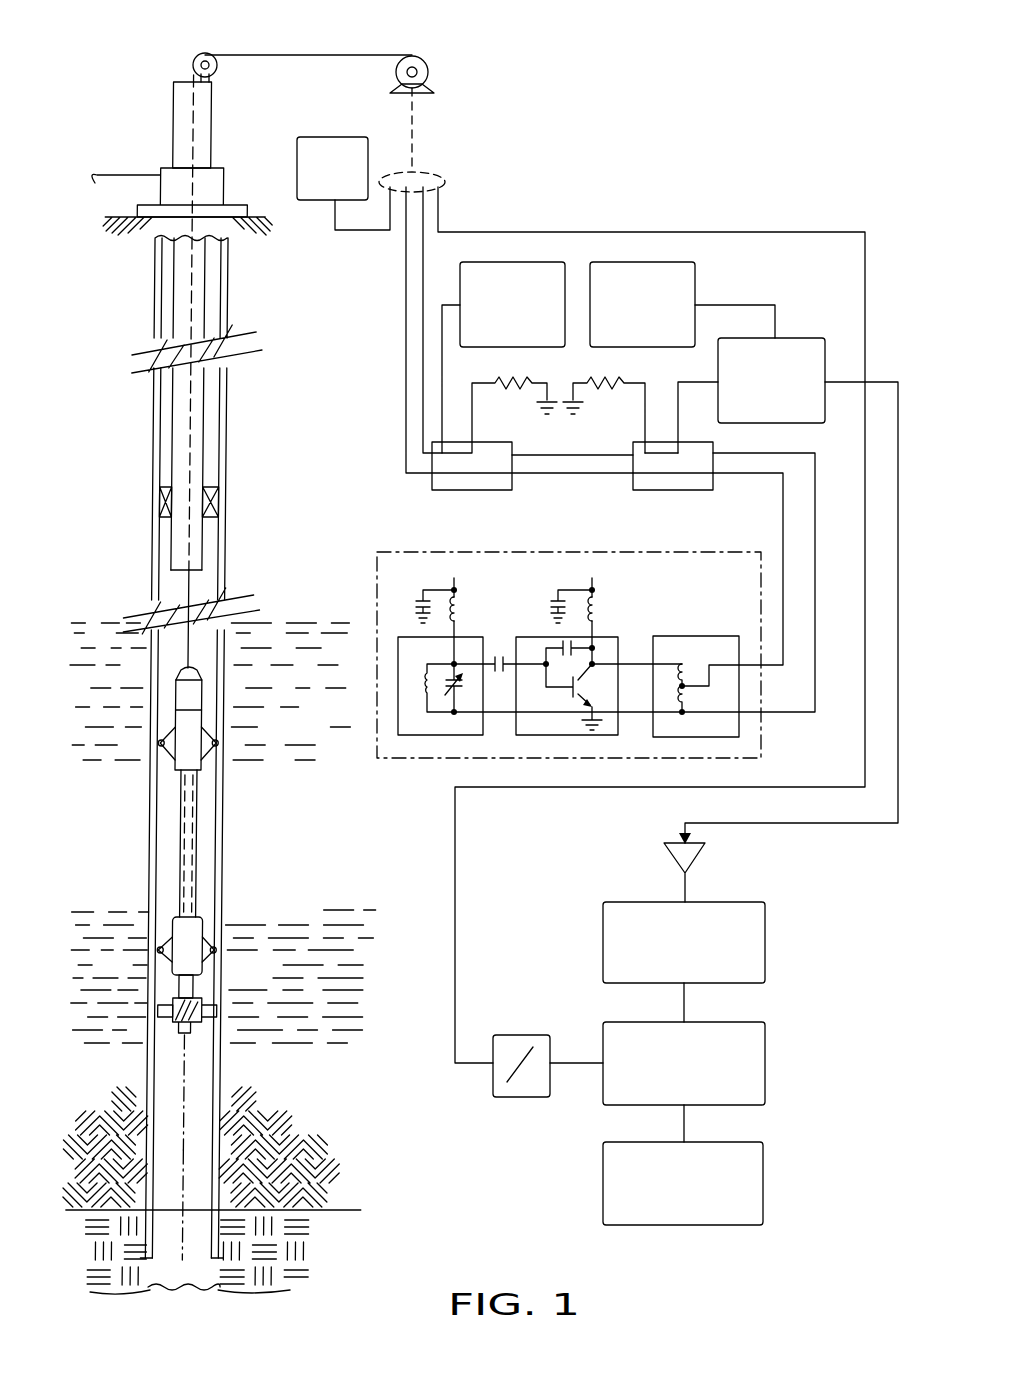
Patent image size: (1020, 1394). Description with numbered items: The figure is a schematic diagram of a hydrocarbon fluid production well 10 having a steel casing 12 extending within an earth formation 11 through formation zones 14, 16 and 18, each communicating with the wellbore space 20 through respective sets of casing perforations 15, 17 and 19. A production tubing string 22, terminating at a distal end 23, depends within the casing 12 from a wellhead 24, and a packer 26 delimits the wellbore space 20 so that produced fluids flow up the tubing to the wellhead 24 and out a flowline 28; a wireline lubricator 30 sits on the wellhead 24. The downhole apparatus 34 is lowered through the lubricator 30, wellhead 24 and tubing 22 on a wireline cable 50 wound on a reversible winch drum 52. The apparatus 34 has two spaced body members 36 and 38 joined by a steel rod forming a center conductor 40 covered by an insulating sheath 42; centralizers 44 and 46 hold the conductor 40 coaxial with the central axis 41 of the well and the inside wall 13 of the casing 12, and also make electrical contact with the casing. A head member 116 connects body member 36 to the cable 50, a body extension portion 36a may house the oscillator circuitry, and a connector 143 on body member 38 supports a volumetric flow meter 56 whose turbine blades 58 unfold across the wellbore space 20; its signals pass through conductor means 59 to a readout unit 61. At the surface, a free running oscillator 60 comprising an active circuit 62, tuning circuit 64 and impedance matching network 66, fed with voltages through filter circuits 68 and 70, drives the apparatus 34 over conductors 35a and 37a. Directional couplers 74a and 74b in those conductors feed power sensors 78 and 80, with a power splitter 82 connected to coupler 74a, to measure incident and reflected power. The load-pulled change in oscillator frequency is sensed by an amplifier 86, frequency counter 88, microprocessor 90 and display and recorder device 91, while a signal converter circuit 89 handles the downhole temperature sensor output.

The fluid production well 10 is at (227, 426).
The earth formation 11 is at (270, 1113).
The casing 12 is at (228, 292).
The inside wall of the casing 13 is at (210, 878).
The formation zone 14 is at (278, 708).
The casing perforations 15 is at (155, 667).
The formation zone 16 is at (293, 918).
The casing perforations 17 is at (150, 980).
The formation zone 18 is at (258, 1285).
The casing perforations 19 is at (165, 1260).
The wellbore space 20 is at (173, 1109).
The production tubing string 22 is at (204, 460).
The distal end of the tubing string 23 is at (182, 571).
The wellhead 24 is at (225, 186).
The packer 26 is at (218, 503).
The flowline 28 is at (132, 150).
The wireline lubricator 30 is at (210, 137).
The apparatus 34 is at (199, 811).
The conductor 35a is at (782, 585).
The body member 36 is at (197, 763).
The body extension portion 36a is at (185, 695).
The conductor 37a is at (814, 604).
The body member 38 is at (200, 925).
The center conductor 40 is at (197, 855).
The longitudinal central axis 41 is at (185, 1225).
The insulating sheath 42 is at (178, 825).
The centralizer 44 is at (160, 734).
The centralizer 46 is at (160, 924).
The wireline cable 50 is at (298, 55).
The winch drum 52 is at (428, 62).
The volumetric flow meter 56 is at (198, 1015).
The turbine blades 58 is at (170, 1012).
The conductor means 59 is at (376, 240).
The oscillator 60 is at (576, 550).
The recording and/or readout unit 61 is at (322, 137).
The active circuit 62 is at (528, 735).
The tuning circuit 64 is at (423, 737).
The impedance matching network circuit 66 is at (668, 737).
The filter circuit 68 is at (600, 612).
The second filter circuit 70 is at (458, 610).
The directional coupler 74a is at (672, 490).
The directional coupler 74b is at (432, 488).
The power sensor 78 is at (605, 262).
The power sensor 80 is at (475, 262).
The power splitter 82 is at (826, 312).
The amplifier 86 is at (702, 852).
The frequency counter 88 is at (766, 950).
The signal converter circuit 89 is at (510, 1035).
The microprocessor 90 is at (766, 1058).
The display and recorder device 91 is at (764, 1160).
The head member 116 is at (203, 676).
The connector 143 is at (205, 983).